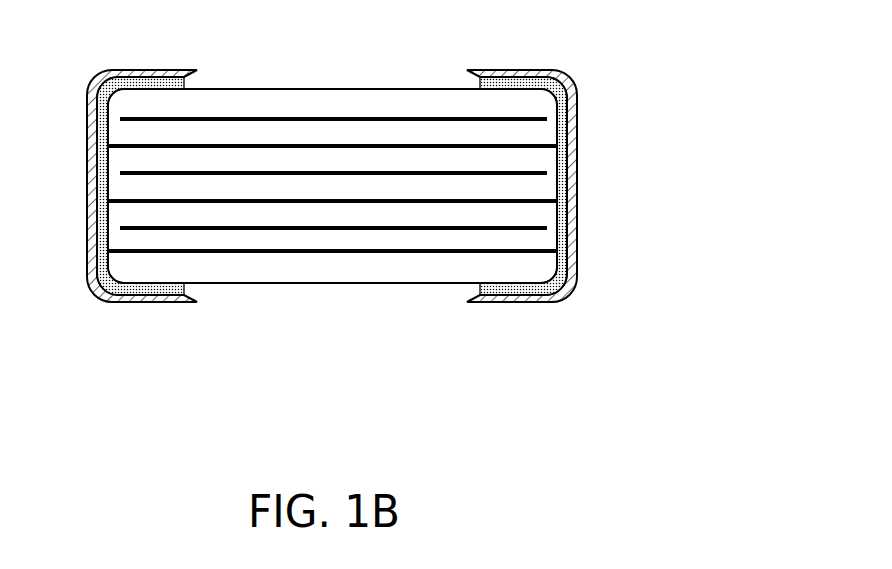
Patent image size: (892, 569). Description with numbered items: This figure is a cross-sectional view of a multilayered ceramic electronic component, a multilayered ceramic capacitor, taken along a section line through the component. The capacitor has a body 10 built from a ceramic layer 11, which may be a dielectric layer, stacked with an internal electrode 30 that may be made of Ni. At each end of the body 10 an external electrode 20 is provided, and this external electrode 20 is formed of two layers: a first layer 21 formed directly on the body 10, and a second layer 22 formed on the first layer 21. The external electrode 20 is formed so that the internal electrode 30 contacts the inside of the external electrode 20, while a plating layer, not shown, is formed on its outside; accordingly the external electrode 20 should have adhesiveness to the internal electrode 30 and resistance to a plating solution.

The body 10 is at (332, 196).
The ceramic layer 11 is at (442, 268).
The internal electrode 30 is at (298, 252).
The external electrode 20 is at (409, 155).
The first layer 21 is at (571, 186).
The second layer 22 is at (563, 75).